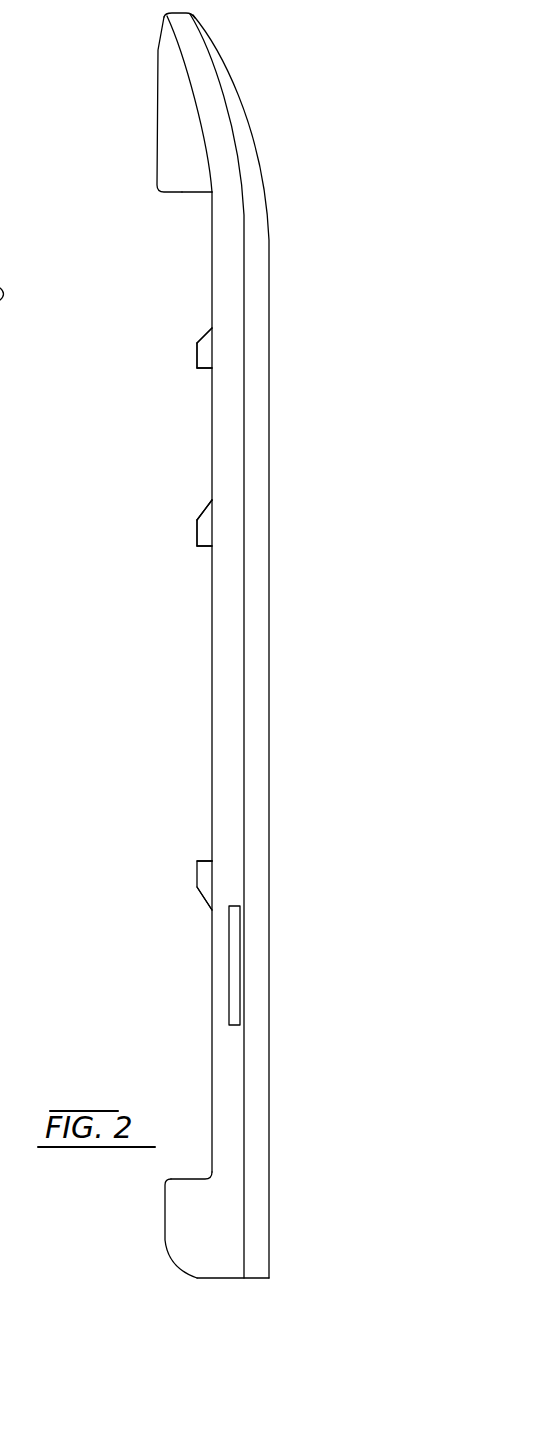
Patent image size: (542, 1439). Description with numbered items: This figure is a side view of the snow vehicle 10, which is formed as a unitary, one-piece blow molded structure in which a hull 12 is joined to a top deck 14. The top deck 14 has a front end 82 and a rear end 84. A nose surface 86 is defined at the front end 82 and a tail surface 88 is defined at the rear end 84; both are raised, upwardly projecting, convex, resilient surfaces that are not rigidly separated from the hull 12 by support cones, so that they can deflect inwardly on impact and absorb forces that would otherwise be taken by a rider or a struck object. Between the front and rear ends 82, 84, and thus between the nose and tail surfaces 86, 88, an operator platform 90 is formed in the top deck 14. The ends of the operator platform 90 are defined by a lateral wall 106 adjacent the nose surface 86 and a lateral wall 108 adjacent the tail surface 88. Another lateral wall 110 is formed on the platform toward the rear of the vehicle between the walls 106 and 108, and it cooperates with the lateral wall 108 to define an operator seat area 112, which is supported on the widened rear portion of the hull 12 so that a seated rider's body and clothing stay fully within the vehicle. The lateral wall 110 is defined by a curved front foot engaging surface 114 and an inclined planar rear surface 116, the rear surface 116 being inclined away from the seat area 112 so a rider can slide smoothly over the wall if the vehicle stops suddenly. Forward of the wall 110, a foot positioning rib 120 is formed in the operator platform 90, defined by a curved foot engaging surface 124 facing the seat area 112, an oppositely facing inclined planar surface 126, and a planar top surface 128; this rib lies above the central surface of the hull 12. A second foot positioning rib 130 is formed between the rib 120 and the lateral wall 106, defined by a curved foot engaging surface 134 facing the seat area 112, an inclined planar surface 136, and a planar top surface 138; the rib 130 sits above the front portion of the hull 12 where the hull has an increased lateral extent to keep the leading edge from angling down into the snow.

The snow vehicle 10 is at (159, 457).
The hull 12 is at (262, 411).
The top deck 14 is at (211, 272).
The front end 82 is at (160, 15).
The rear end 84 is at (182, 1280).
The nose surface 86 is at (180, 136).
The tail surface 88 is at (167, 1230).
The operator platform 90 is at (212, 706).
The lateral wall 106 is at (182, 194).
The lateral wall 108 is at (185, 1178).
The lateral wall 110 is at (210, 877).
The operator seat area 112 is at (214, 1042).
The curved front foot engaging surface 114 is at (208, 861).
The inclined planar rear surface 116 is at (209, 900).
The foot positioning rib 120 is at (196, 521).
The curved foot engaging surface 124 is at (205, 549).
The inclined planar surface 126 is at (208, 504).
The planar top surface 128 is at (196, 545).
The second foot positioning rib 130 is at (195, 345).
The curved foot engaging surface 134 is at (204, 369).
The inclined planar surface 136 is at (209, 331).
The planar top surface 138 is at (196, 366).